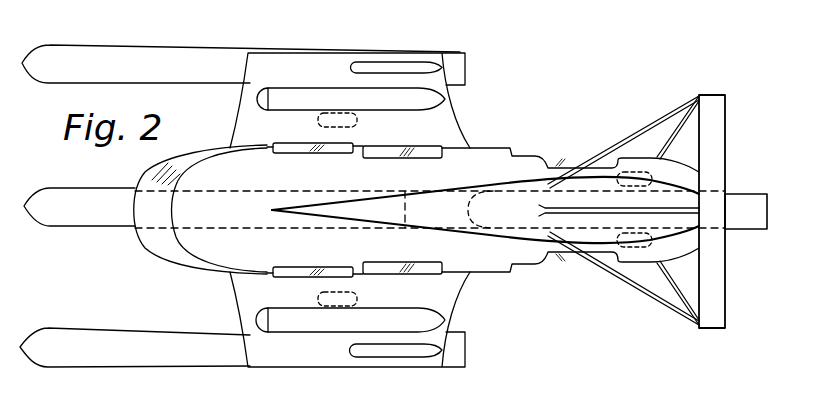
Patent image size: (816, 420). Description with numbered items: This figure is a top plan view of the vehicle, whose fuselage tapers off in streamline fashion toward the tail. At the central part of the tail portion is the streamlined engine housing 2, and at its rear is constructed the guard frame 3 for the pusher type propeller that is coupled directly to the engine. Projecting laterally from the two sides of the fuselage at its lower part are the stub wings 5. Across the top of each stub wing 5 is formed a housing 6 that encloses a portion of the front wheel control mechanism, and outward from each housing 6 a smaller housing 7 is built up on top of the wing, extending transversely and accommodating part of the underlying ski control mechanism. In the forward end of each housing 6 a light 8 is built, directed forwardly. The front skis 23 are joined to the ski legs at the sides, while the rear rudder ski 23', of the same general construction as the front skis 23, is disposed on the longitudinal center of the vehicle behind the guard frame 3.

The engine housing 2 is at (568, 190).
The guard frame 3 is at (713, 148).
The stub wing 5 is at (294, 66).
The housing 6 is at (398, 99).
The smaller housing 7 is at (383, 65).
The light 8 is at (262, 99).
The ski 23 is at (240, 190).
The rear rudder ski 23' is at (750, 238).